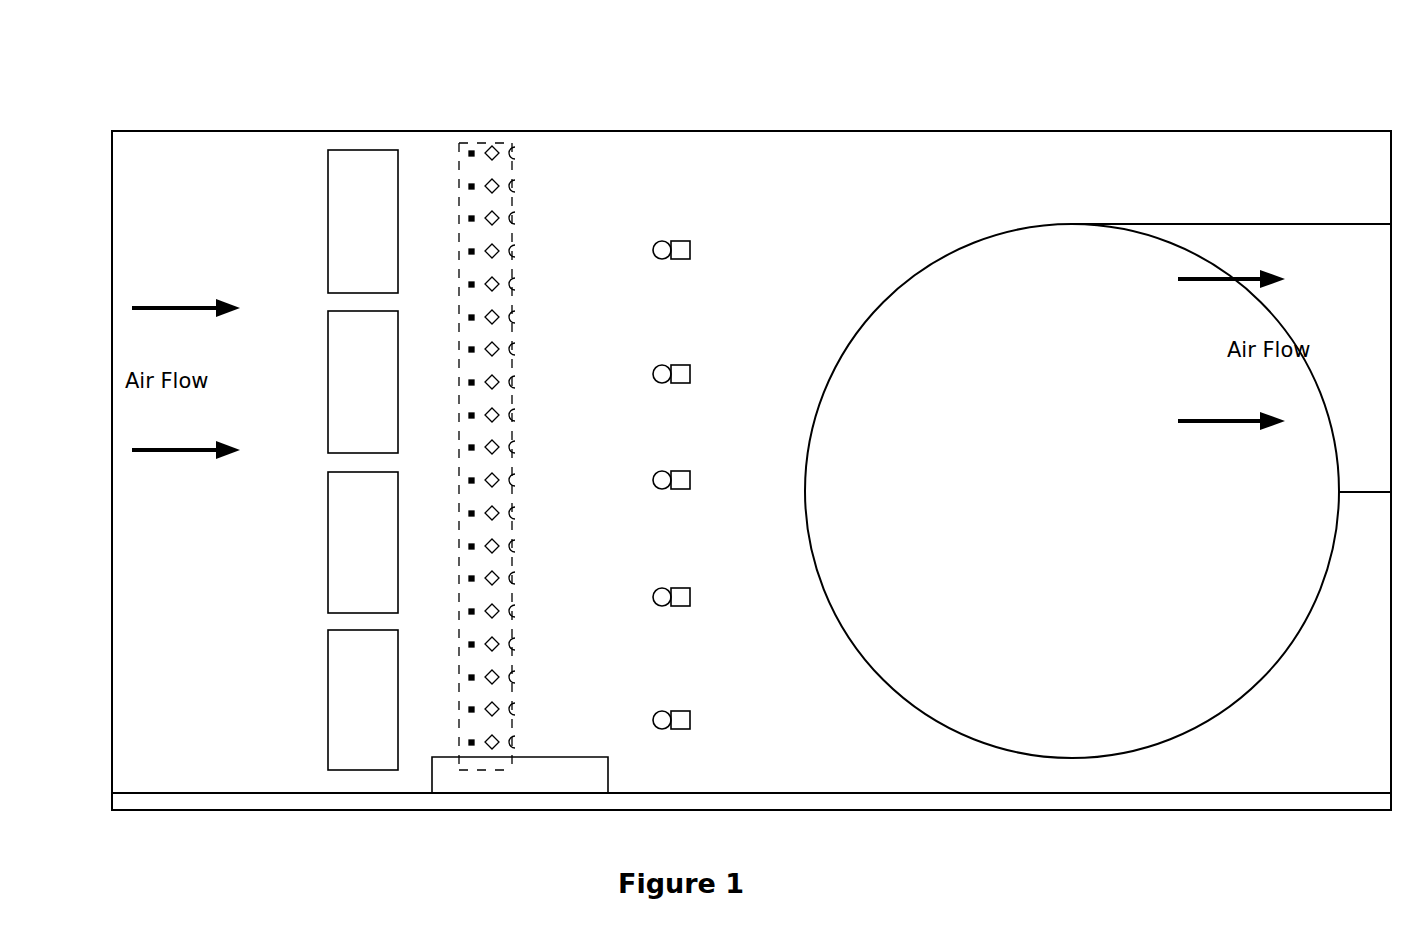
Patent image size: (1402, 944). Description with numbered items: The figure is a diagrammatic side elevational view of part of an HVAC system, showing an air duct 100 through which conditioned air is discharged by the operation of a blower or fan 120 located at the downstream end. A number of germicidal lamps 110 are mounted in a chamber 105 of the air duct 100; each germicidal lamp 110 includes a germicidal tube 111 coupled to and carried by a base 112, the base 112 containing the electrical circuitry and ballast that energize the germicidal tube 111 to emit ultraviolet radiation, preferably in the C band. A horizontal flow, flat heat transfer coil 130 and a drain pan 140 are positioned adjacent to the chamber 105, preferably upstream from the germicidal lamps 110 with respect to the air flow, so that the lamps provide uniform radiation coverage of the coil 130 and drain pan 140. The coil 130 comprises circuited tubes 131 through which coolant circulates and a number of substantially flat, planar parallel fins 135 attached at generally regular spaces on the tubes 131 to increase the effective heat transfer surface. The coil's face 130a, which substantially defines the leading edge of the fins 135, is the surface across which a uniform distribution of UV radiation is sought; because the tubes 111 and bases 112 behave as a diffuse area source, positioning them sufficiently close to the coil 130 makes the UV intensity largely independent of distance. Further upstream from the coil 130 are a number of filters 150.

The air duct 100 is at (750, 131).
The chamber 105 is at (803, 187).
The germicidal lamps 110 is at (744, 478).
The germicidal tube 111 is at (662, 384).
The base 112 is at (690, 372).
The blower or fan 120 is at (1073, 223).
The heat transfer coil 130 is at (512, 159).
The coil face 130a is at (529, 348).
The circuited tubes 131 is at (498, 252).
The fins 135 is at (512, 523).
The drain pan 140 is at (555, 783).
The filters 150 is at (363, 150).